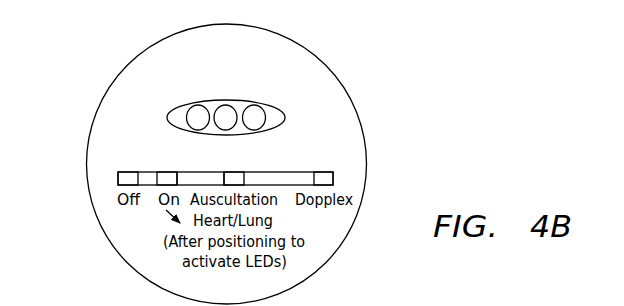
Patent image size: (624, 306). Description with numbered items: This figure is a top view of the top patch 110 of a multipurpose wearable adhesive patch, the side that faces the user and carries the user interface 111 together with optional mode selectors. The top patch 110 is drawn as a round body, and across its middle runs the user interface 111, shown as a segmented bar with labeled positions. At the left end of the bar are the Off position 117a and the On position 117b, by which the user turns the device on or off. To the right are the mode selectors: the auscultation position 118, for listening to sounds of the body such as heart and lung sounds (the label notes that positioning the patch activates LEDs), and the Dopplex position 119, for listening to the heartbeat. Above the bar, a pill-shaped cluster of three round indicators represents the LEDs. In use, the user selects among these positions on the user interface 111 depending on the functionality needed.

The top patch 110 is at (303, 82).
The user interface 111 is at (118, 178).
The Off selector 117a is at (125, 172).
The On selector 117b is at (167, 172).
The auscultation mode selector 118 is at (237, 172).
The heartbeat listening mode selector 119 is at (322, 172).